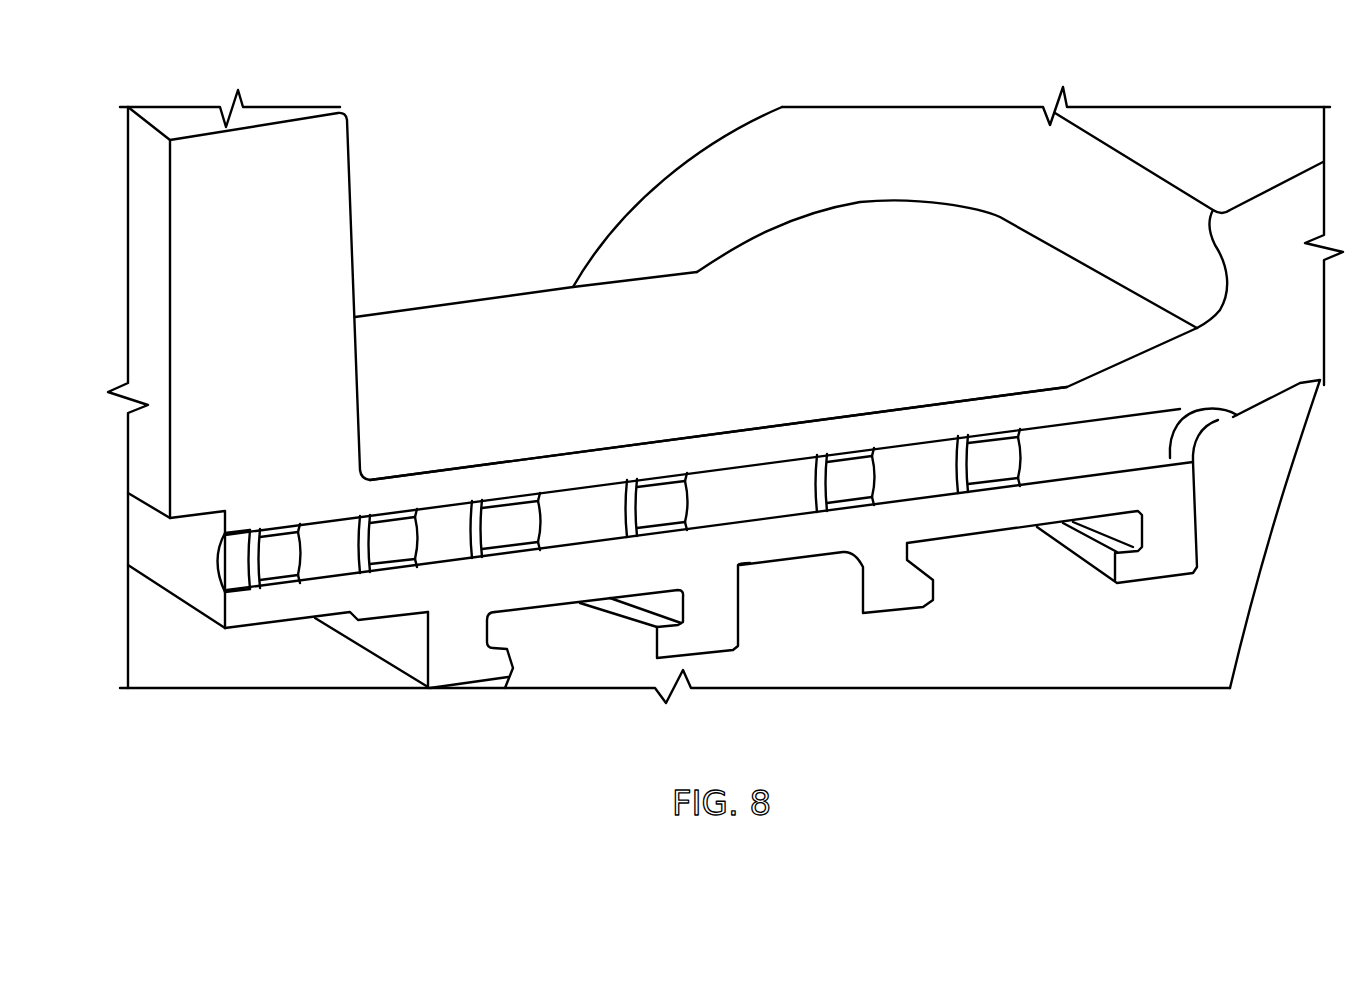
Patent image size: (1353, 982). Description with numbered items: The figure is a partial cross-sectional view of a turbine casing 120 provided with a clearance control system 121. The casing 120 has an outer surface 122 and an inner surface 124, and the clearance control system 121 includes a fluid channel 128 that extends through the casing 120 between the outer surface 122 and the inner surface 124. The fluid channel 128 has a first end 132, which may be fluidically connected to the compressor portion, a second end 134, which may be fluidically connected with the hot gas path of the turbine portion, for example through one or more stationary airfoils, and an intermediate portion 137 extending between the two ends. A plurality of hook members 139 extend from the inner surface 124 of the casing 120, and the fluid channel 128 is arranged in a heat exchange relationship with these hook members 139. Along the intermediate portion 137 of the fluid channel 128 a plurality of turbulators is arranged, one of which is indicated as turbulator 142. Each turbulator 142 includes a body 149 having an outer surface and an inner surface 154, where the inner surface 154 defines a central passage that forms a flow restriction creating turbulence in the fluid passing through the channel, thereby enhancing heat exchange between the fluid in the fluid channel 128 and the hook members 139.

The casing 120 is at (447, 258).
The outer surface 122 is at (577, 347).
The inner surface 124 is at (397, 620).
The fluid channel 128 is at (236, 560).
The first end 132 is at (240, 586).
The second end 134 is at (1163, 455).
The intermediate portion 137 is at (593, 522).
The hook members 139 is at (462, 710).
The turbulator 142 is at (546, 514).
The body 149 is at (465, 535).
The inner surface 154 is at (507, 528).
The clearance control system 121 is at (1074, 450).